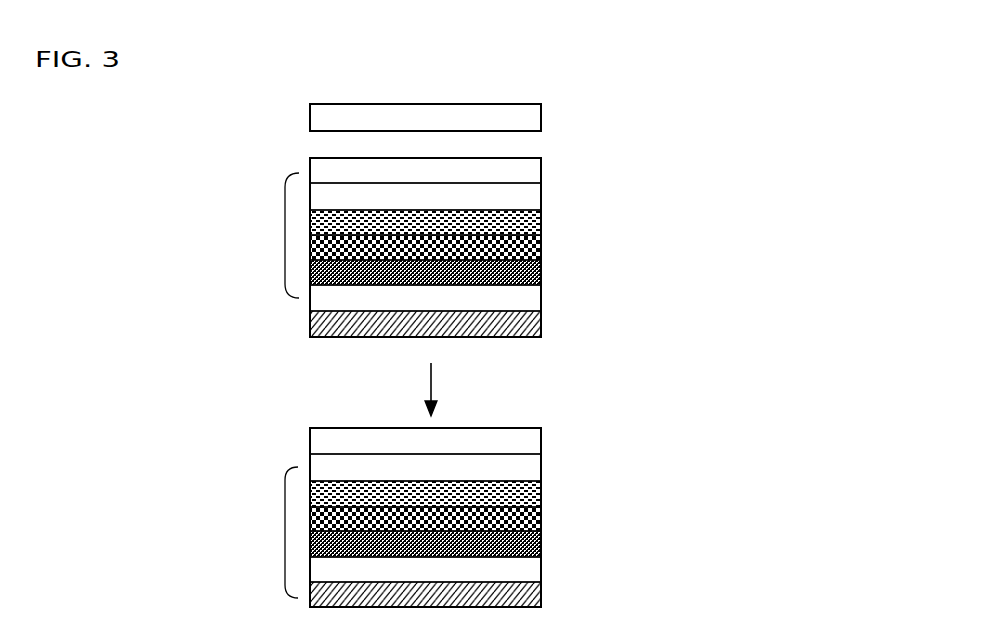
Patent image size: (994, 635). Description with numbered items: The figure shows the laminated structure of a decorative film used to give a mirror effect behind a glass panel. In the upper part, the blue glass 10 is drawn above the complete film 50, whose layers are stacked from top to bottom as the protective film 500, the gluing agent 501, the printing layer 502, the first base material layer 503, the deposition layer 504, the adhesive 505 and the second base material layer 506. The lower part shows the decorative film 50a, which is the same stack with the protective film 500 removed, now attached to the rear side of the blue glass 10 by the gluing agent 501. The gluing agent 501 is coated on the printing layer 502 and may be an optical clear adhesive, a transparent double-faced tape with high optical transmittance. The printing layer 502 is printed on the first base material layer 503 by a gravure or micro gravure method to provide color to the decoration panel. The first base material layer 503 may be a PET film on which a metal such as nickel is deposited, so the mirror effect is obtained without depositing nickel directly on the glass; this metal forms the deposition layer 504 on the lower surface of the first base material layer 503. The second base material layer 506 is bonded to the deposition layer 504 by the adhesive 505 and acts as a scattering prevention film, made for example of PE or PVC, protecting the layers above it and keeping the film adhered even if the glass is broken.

The blue glass 10 is at (542, 115).
The film 50 is at (285, 233).
The decorative film 50a is at (285, 548).
The protective film 500 is at (542, 167).
The gluing agent 501 is at (542, 192).
The printing layer 502 is at (542, 218).
The first base material layer 503 is at (542, 245).
The deposition layer 504 is at (542, 270).
The adhesive 505 is at (542, 295).
The second base material layer 506 is at (542, 321).